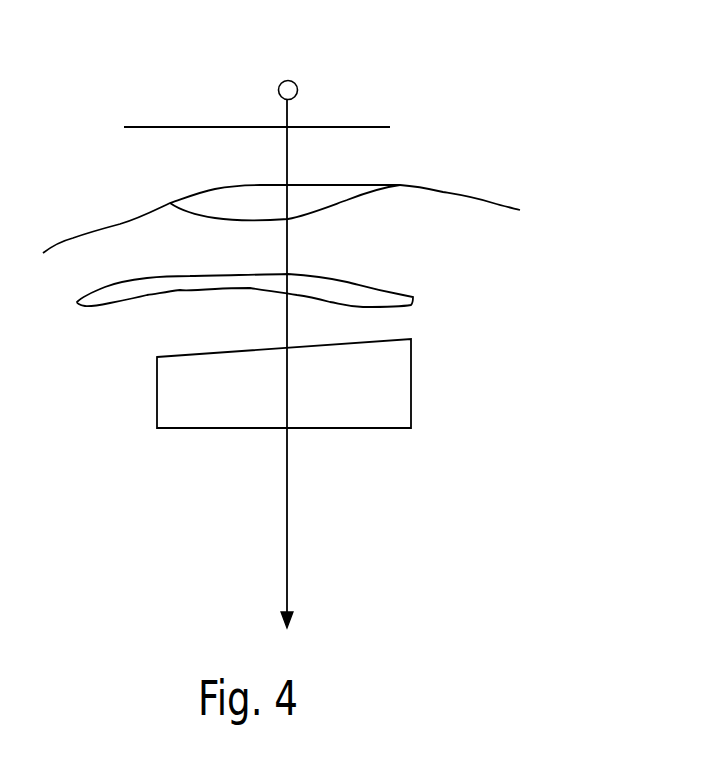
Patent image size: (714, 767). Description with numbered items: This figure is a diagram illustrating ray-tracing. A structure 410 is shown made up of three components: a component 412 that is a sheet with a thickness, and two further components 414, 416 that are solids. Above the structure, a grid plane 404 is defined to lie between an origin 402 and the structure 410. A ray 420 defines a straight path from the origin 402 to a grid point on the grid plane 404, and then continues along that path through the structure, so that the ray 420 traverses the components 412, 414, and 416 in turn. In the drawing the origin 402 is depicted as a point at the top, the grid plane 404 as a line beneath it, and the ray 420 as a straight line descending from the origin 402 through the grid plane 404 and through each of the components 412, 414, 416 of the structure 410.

The origin 402 is at (296, 84).
The grid plane 404 is at (360, 127).
The structure 410 is at (545, 290).
The component 412 is at (493, 202).
The component 414 is at (402, 288).
The component 416 is at (411, 382).
The ray 420 is at (287, 512).